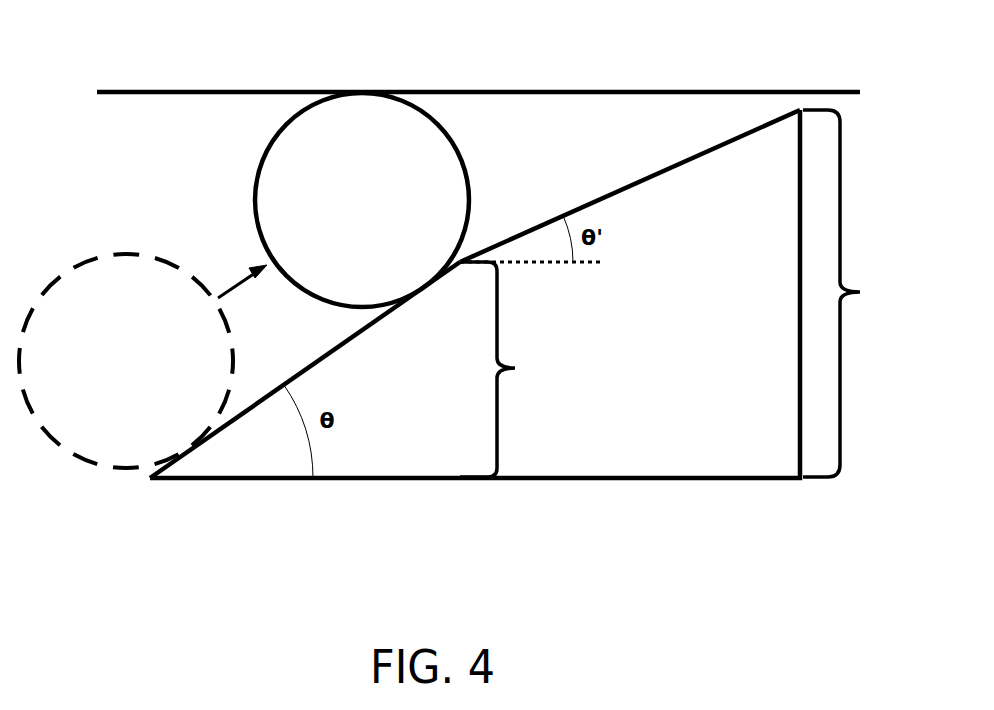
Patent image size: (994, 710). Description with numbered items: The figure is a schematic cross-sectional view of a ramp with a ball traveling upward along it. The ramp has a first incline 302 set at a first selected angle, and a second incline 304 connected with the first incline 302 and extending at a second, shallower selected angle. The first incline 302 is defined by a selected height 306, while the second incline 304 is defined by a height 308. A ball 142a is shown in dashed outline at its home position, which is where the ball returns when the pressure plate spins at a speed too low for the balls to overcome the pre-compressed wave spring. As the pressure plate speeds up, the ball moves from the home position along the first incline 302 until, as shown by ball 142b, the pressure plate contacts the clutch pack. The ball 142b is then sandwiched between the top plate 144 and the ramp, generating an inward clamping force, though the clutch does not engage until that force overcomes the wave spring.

The top plate 144 is at (527, 90).
The ball in home position 142a is at (143, 361).
The ball in contact position 142b is at (362, 200).
The first incline 302 is at (365, 330).
The second incline 304 is at (667, 170).
The height of first incline 306 is at (526, 369).
The height of second incline 308 is at (870, 293).